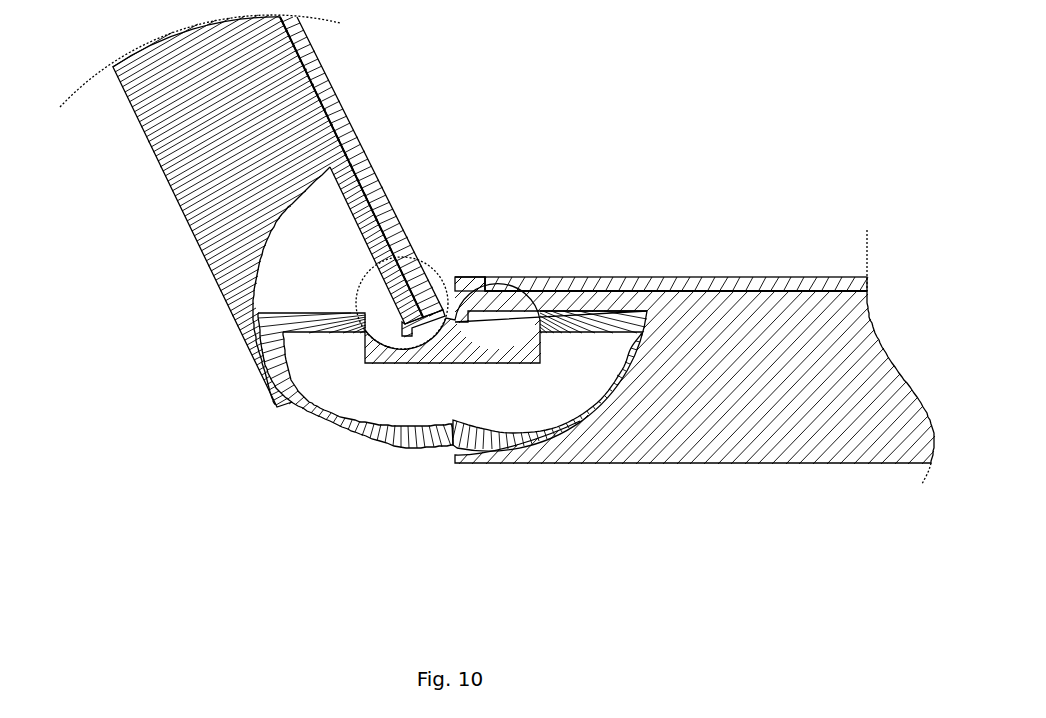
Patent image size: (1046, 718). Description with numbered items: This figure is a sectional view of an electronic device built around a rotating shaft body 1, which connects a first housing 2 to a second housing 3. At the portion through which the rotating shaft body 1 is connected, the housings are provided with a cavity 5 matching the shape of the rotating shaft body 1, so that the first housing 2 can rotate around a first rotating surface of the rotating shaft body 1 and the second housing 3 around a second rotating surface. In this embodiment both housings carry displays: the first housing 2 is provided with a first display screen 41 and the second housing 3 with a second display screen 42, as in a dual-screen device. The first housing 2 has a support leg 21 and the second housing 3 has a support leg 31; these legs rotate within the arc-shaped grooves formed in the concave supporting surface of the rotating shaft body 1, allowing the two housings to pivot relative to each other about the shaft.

The rotating shaft body 1 is at (383, 472).
The first housing 2 is at (220, 178).
The second housing 3 is at (702, 423).
The cavity 5 is at (303, 292).
The support leg 21 is at (423, 327).
The support leg 31 is at (465, 297).
The first display screen 41 is at (363, 185).
The second display screen 42 is at (678, 283).